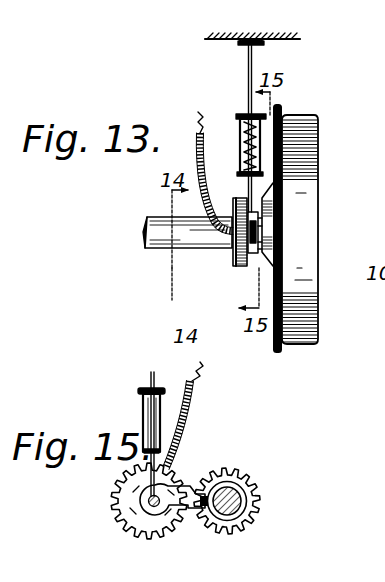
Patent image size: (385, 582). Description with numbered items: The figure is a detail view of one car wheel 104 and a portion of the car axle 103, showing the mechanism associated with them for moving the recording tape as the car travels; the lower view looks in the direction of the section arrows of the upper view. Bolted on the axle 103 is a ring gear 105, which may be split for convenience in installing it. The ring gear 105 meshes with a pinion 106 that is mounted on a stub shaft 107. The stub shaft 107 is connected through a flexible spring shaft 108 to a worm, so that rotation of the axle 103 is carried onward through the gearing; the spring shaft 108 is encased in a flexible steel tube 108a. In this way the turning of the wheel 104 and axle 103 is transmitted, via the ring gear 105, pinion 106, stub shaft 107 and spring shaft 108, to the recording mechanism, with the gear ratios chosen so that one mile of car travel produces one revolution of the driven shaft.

In FIG. 13, the car axle 103 is at (150, 237).
In FIG. 15, the car axle 103 is at (241, 502).
In FIG. 13, the car wheel 104 is at (320, 177).
In FIG. 15, the ring gear 105 is at (250, 478).
In FIG. 13, the pinion 106 is at (240, 268).
In FIG. 15, the pinion 106 is at (162, 518).
In FIG. 13, the stub shaft 107 is at (262, 229).
In FIG. 15, the stub shaft 107 is at (150, 501).
In FIG. 13, the flexible spring shaft 108 is at (228, 99).
In FIG. 15, the flexible spring shaft 108 is at (200, 380).
In FIG. 15, the flexible steel tube 108a is at (198, 433).